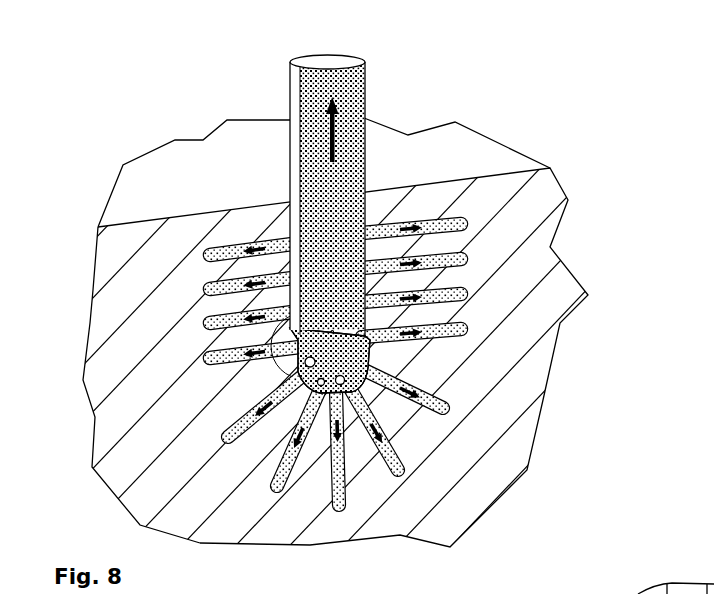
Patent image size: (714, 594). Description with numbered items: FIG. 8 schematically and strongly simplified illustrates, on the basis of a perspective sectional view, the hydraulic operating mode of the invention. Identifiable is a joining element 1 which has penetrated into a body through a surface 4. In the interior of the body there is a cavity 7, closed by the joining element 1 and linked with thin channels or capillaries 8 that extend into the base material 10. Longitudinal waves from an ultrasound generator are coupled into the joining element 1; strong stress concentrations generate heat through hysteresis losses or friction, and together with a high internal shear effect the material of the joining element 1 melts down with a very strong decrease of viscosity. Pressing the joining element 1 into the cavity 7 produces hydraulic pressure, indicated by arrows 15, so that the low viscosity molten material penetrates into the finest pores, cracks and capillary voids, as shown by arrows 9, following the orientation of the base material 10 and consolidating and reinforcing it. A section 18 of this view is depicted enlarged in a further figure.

The joining element 1 is at (369, 231).
The surface 4 is at (173, 167).
The cavity 7 is at (366, 368).
The channels 8 is at (440, 224).
The arrows 9 is at (432, 318).
The base material 10 is at (533, 262).
The section 18 is at (277, 360).
The arrows 15 is at (588, 593).